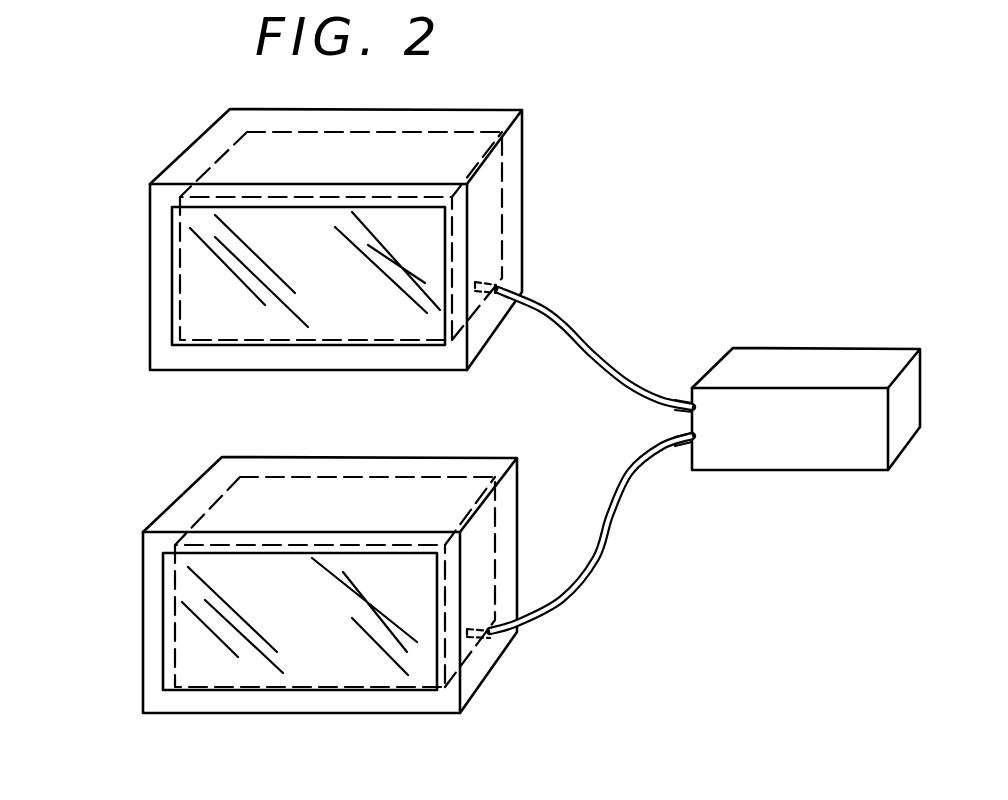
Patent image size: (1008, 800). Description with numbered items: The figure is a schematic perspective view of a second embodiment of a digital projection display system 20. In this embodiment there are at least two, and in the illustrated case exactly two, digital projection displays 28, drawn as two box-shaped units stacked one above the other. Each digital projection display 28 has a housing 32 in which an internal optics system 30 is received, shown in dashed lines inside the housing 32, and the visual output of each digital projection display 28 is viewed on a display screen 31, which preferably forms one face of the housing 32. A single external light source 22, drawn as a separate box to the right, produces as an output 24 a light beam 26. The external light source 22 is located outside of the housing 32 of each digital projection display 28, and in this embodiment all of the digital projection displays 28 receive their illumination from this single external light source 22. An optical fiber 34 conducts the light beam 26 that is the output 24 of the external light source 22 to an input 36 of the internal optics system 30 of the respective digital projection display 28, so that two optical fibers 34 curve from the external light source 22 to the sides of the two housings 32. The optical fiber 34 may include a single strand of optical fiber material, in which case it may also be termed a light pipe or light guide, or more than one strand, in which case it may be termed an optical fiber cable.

The digital projection display system 20 is at (165, 128).
The external light source 22 is at (805, 352).
The output 24 is at (690, 412).
The light beam 26 is at (620, 370).
The digital projection display 28 is at (145, 345).
The internal optics system 30 is at (178, 247).
The display screen 31 is at (177, 290).
The housing 32 is at (525, 132).
The optical fiber 34 is at (566, 310).
The input 36 is at (475, 284).